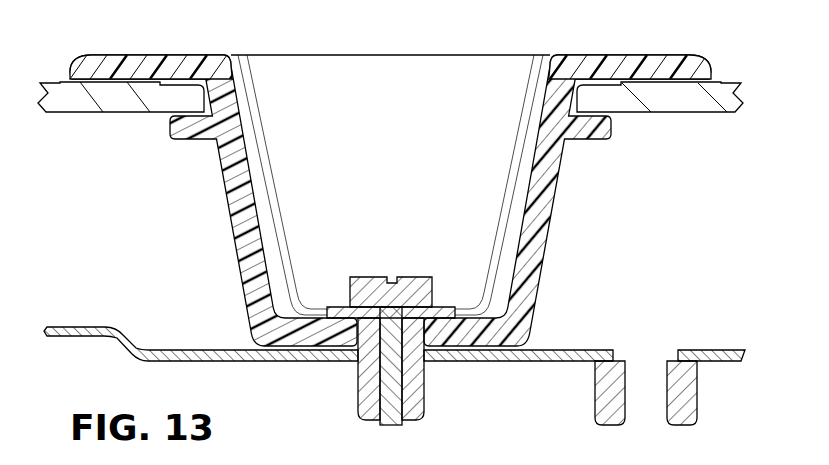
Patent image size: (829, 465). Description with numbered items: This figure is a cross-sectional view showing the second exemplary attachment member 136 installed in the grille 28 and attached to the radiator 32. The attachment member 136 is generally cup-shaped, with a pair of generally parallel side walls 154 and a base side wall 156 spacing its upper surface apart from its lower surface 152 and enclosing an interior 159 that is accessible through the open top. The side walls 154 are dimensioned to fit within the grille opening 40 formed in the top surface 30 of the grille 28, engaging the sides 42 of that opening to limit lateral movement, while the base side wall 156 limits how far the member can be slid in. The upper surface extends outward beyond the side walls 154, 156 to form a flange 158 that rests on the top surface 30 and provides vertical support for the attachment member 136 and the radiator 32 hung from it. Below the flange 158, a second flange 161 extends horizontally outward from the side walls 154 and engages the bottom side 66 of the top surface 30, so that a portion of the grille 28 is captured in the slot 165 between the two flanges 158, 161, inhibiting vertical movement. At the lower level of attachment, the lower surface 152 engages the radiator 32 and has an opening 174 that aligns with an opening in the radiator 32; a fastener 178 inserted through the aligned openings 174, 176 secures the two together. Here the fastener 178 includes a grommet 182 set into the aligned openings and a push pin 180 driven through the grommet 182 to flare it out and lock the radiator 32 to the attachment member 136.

The grille 28 is at (727, 97).
The top surface 30 is at (670, 79).
The radiator 32 is at (233, 362).
The grille opening 40 is at (214, 95).
The sides 42 is at (216, 106).
The bottom side 66 is at (685, 113).
The second exemplary attachment member 136 is at (547, 43).
The lower surface 152 is at (496, 323).
The side walls 154 is at (242, 244).
The base side wall 156 is at (294, 92).
The flange 158 is at (690, 66).
The interior 159 is at (407, 97).
The flange 161 is at (601, 140).
The slot 165 is at (613, 98).
The opening 174 is at (391, 292).
The fastener washer portion 176 is at (391, 312).
The fastener 178 is at (403, 278).
The push pin 180 is at (361, 283).
The grommet 182 is at (374, 323).